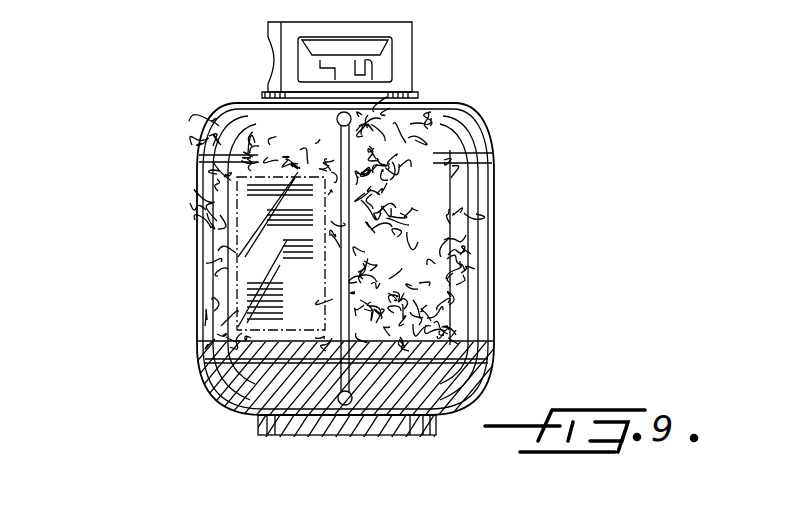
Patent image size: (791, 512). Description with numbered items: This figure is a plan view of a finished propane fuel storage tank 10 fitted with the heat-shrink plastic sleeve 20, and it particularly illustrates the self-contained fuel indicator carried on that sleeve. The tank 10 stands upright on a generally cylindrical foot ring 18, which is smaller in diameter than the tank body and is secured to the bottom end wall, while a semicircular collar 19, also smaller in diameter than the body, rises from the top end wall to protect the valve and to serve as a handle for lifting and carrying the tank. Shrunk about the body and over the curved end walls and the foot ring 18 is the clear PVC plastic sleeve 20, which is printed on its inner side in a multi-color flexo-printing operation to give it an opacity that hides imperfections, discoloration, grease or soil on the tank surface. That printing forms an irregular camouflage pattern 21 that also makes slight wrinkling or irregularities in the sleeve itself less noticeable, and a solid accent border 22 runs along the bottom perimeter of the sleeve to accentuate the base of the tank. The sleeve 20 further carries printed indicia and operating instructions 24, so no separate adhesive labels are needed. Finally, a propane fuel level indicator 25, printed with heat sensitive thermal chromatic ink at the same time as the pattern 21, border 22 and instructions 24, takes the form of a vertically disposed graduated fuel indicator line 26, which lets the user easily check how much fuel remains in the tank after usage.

The propane fuel storage tank 10 is at (155, 152).
The foot ring 18 is at (258, 422).
The collar 19 is at (403, 33).
The plastic sleeve 20 is at (498, 193).
The camouflage pattern 21 is at (440, 258).
The accent border 22 is at (495, 385).
The indicia and operating instructions 24 is at (258, 290).
The propane fuel level indicator 25 is at (375, 154).
The graduated fuel indicator line 26 is at (346, 201).